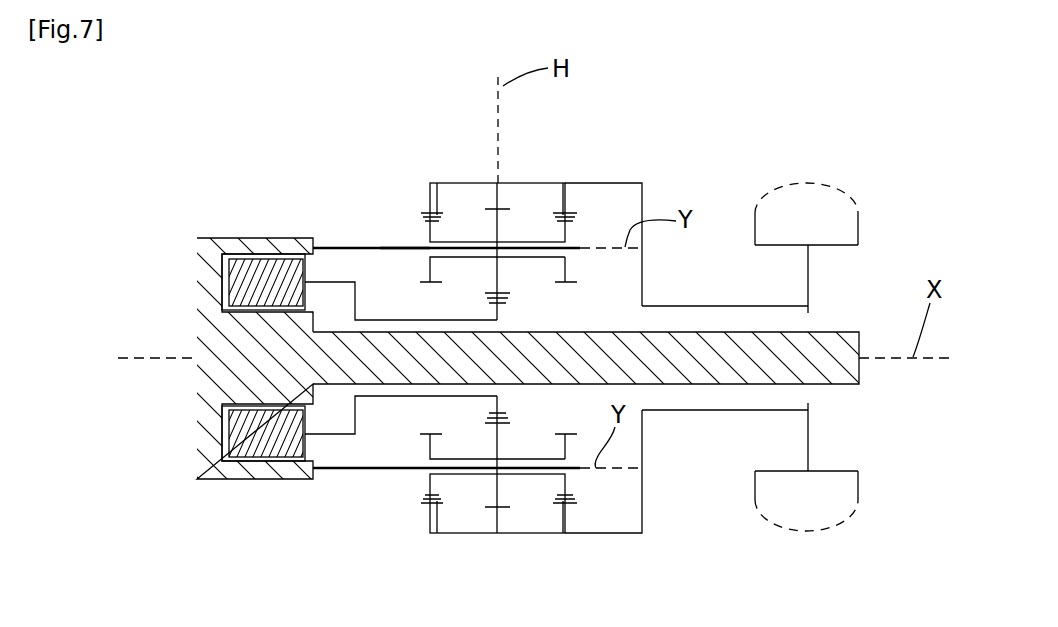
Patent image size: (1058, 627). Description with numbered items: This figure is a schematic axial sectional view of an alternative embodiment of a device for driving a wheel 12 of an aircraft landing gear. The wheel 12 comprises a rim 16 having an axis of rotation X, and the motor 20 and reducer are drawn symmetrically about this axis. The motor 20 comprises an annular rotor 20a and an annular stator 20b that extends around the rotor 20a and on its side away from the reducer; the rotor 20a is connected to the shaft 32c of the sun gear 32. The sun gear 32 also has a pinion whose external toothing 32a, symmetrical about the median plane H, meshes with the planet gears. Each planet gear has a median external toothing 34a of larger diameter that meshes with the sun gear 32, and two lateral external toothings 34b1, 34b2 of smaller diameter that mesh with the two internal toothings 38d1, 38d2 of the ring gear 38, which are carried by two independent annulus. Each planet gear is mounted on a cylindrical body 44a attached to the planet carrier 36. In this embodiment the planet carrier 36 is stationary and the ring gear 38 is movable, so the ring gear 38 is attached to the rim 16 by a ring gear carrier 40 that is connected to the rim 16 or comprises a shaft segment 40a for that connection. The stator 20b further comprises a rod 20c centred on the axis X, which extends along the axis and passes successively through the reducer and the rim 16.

The wheel 12 is at (833, 329).
The rim 16 is at (845, 246).
The motor 20 is at (513, 410).
The rotor 20a is at (285, 447).
The stator 20b is at (200, 468).
The rod 20c is at (836, 370).
The sun gear 32 is at (510, 322).
The external toothing 32a is at (504, 302).
The shaft 32c is at (397, 398).
The median external toothing 34a is at (495, 206).
The first lateral external toothing 34b1 is at (432, 282).
The second lateral external toothing 34b2 is at (572, 283).
The planet carrier 36 is at (353, 246).
The ring gear 38 is at (523, 181).
The first internal toothing 38d1 is at (437, 183).
The second internal toothing 38d2 is at (568, 216).
The ring gear carrier 40 is at (686, 324).
The shaft segment 40a is at (689, 306).
The cylindrical body 44a is at (396, 242).